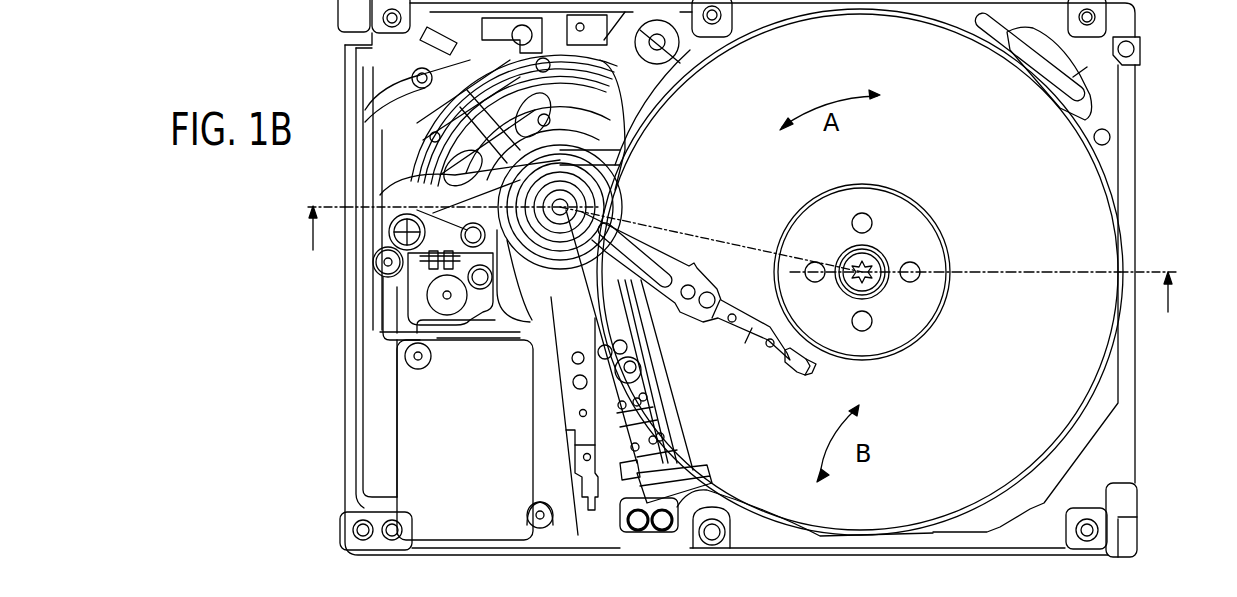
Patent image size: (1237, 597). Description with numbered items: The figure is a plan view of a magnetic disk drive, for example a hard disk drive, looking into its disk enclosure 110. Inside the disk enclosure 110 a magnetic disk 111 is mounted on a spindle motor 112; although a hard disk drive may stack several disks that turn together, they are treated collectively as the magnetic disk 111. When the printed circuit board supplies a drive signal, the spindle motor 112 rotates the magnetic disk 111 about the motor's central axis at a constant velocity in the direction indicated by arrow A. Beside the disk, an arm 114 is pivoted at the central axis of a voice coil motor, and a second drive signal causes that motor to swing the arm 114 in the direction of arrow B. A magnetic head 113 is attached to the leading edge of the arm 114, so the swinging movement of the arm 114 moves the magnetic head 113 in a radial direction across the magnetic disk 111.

The disk enclosure 110 is at (1141, 144).
The magnetic disk 111 is at (1093, 340).
The spindle motor 112 is at (910, 330).
The magnetic head 113 is at (803, 375).
The arm 114 is at (718, 333).